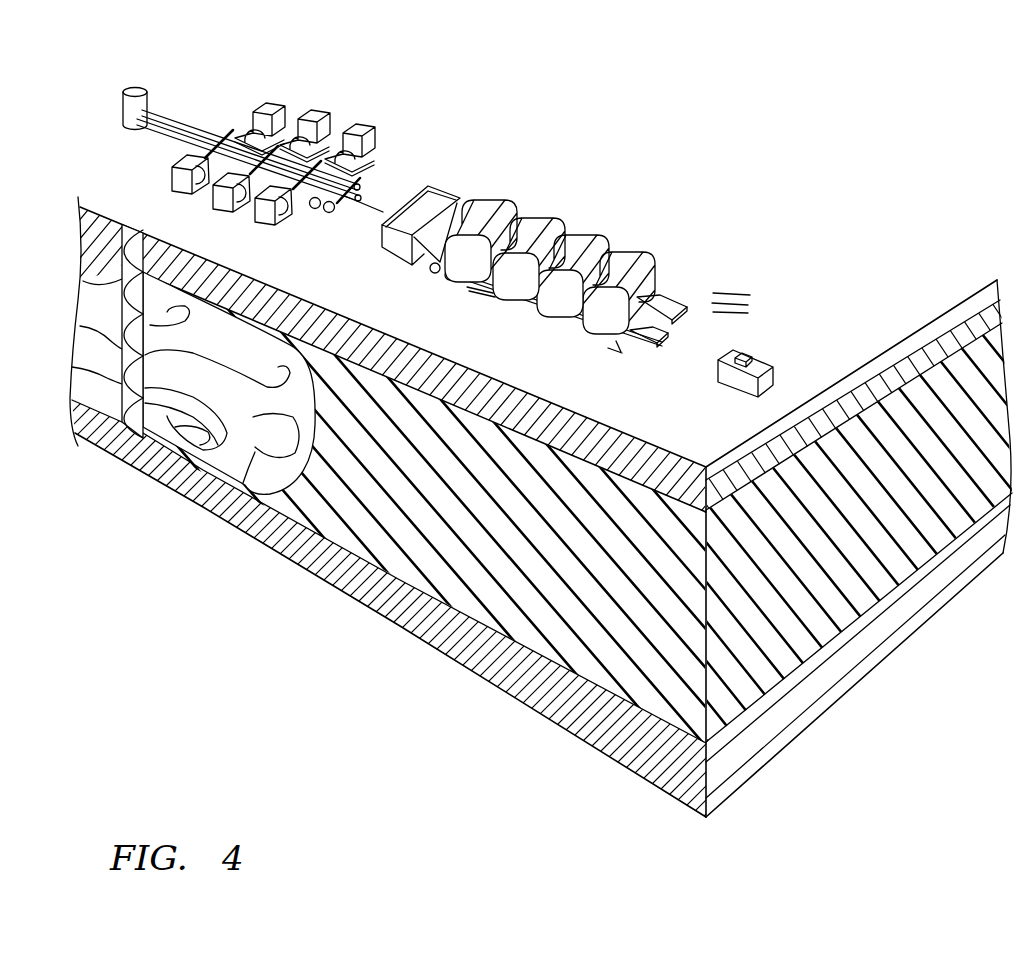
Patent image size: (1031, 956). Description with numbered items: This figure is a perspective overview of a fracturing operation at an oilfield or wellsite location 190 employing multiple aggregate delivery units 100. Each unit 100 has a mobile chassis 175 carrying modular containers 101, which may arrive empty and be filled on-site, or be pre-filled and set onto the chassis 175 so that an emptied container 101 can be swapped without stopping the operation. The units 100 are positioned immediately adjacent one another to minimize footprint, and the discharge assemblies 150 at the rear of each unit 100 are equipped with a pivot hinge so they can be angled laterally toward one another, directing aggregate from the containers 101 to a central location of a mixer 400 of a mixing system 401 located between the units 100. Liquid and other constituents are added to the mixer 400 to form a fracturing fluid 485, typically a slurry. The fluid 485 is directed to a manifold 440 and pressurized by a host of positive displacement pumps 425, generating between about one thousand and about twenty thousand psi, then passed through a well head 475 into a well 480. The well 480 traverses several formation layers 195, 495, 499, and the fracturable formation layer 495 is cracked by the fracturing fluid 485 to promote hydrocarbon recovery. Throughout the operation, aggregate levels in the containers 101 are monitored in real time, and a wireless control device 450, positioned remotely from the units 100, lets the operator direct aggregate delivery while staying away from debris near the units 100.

The aggregate delivery unit 100 is at (560, 271).
The modular container 101 is at (494, 212).
The discharge assembly 150 is at (405, 259).
The mobile chassis 175 is at (603, 350).
The oilfield or wellsite location 190 is at (939, 287).
The formation layer 195 is at (578, 441).
The mixer 400 is at (411, 201).
The mixing system 401 is at (288, 127).
The positive displacement pumps 425 is at (312, 114).
The manifold 440 is at (212, 136).
The wireless control device 450 is at (753, 361).
The well head 475 is at (139, 86).
The well 480 is at (133, 228).
The fracturing fluid 485 is at (233, 492).
The fracturable formation layer 495 is at (627, 597).
The formation layer 499 is at (772, 751).